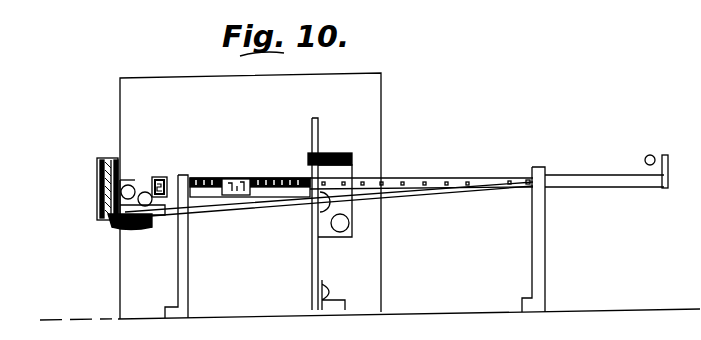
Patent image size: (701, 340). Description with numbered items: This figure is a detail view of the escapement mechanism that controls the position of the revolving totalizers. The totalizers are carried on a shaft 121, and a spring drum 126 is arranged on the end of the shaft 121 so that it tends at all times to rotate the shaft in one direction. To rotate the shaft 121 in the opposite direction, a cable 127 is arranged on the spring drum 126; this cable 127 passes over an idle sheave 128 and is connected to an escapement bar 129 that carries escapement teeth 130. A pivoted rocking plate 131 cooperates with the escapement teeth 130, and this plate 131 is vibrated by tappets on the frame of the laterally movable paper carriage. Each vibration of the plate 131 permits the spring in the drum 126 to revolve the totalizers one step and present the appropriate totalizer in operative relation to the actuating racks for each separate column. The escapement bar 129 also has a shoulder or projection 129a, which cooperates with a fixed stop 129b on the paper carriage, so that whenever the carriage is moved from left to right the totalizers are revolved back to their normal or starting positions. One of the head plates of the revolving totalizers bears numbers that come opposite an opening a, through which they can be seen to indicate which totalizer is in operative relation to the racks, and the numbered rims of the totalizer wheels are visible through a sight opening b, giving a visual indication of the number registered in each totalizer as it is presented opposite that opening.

The shaft 121 is at (120, 184).
The spring drum 126 is at (100, 196).
The cable 127 is at (172, 218).
The idle sheave 128 is at (116, 226).
The escapement bar 129 is at (595, 182).
The shoulder or projection 129a is at (664, 155).
The fixed stop 129b is at (645, 160).
The escapement teeth 130 is at (446, 182).
The pivoted rocking plate 131 is at (318, 257).
The opening a is at (163, 177).
The sight opening b is at (252, 178).